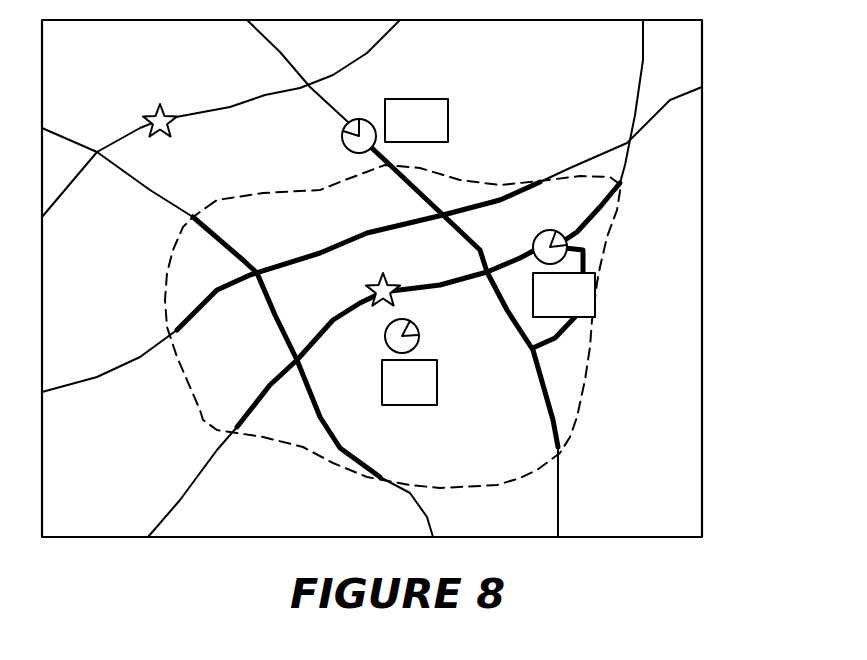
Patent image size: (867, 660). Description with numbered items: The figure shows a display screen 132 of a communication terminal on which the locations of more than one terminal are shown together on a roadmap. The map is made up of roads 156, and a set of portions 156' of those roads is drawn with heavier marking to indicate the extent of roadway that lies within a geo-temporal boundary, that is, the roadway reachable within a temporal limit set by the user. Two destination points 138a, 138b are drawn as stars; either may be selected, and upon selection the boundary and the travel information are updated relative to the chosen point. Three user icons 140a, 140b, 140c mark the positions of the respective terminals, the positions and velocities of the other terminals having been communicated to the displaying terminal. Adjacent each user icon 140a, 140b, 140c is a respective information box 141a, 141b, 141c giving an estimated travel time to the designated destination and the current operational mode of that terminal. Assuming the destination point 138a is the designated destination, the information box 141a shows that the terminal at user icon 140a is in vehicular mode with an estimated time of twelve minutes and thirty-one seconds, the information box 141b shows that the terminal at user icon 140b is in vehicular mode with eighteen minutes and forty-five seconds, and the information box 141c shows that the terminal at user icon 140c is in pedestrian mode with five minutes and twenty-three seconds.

The display screen 132 is at (703, 113).
The roads 156 is at (221, 118).
The portions of the roads 156' is at (286, 347).
The destination point 138a is at (374, 285).
The destination point 138b is at (148, 116).
The user icon 140a is at (534, 240).
The user icon 140b is at (342, 129).
The user icon 140c is at (419, 334).
The information box 141a is at (596, 305).
The information box 141b is at (448, 118).
The information box 141c is at (437, 392).